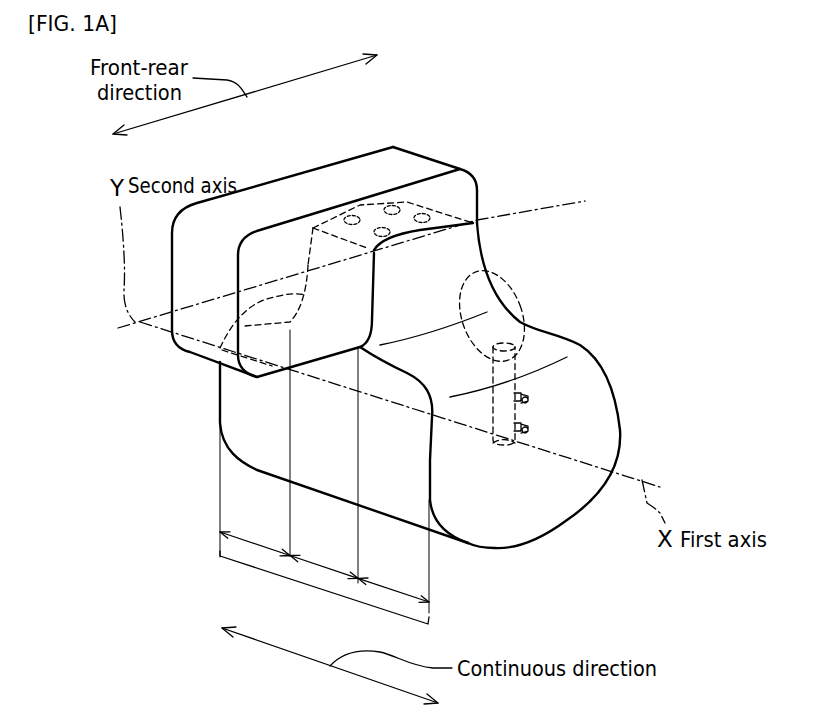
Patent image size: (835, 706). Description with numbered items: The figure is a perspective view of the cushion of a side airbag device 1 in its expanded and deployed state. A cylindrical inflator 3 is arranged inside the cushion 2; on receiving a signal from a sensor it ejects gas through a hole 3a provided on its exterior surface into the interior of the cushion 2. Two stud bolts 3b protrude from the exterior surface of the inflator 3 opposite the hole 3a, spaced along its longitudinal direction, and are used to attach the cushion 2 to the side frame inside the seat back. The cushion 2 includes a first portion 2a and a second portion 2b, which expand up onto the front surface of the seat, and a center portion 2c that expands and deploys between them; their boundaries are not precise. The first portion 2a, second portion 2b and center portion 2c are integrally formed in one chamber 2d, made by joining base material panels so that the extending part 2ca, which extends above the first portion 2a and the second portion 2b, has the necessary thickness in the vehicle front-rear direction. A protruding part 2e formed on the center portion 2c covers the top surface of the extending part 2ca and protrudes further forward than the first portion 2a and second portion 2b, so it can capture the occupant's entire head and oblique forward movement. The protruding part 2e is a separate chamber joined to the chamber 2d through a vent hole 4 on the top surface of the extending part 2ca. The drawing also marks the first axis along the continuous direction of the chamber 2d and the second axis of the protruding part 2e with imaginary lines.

The side airbag device 1 is at (535, 284).
The cushion 2 is at (527, 312).
The first portion 2a is at (392, 590).
The second portion 2b is at (260, 545).
The center portion 2c is at (327, 567).
The extending part 2ca is at (460, 245).
The chamber 2d is at (323, 589).
The protruding part 2e is at (272, 257).
The inflator 3 is at (517, 353).
The hole 3a is at (492, 307).
The stud bolts 3b is at (530, 427).
The vent hole 4 is at (382, 228).